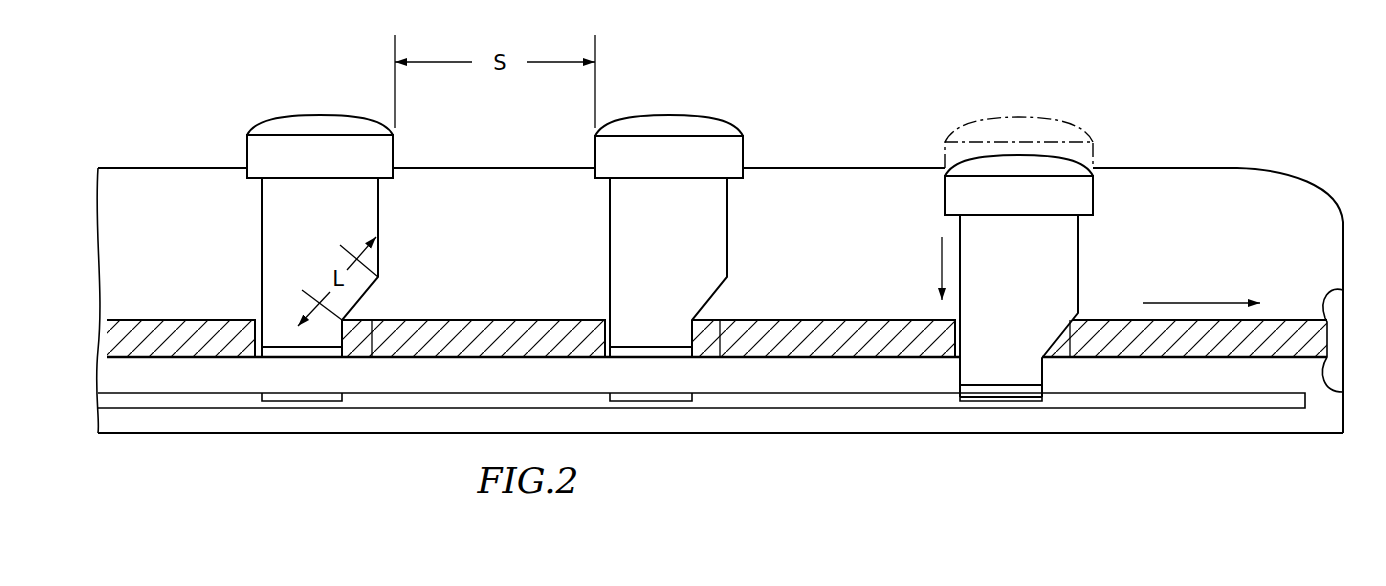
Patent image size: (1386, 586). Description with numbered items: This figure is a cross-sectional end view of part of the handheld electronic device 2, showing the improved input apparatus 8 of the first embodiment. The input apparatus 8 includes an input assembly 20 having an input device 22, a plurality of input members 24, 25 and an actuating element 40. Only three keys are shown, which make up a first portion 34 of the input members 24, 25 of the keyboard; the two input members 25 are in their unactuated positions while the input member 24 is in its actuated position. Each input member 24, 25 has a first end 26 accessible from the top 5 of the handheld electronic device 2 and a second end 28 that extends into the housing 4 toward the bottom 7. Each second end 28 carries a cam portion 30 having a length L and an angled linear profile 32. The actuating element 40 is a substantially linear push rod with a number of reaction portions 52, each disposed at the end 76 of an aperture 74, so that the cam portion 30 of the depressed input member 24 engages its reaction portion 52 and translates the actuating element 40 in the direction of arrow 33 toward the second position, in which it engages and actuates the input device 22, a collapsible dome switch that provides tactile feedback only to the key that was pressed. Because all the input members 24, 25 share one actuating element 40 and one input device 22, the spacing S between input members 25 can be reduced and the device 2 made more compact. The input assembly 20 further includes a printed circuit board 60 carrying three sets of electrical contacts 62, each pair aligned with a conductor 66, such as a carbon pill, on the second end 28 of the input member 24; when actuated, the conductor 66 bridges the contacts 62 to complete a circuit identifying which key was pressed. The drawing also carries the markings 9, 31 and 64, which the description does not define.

The handheld electronic device 2 is at (742, 112).
The housing 4 is at (1290, 182).
The top 5 is at (848, 168).
The bottom 7 is at (878, 433).
The input apparatus 8 is at (775, 470).
The side wall 9 is at (1345, 245).
The input assembly 20 is at (1100, 240).
The input device 22 is at (1327, 305).
The input member 24 is at (968, 228).
The input members 25 is at (265, 197).
The first end 26 is at (352, 125).
The second end 28 is at (272, 332).
The cam portion 30 is at (370, 283).
The insertion direction 31 is at (942, 250).
The profile 32 is at (368, 291).
The arrow 33 is at (1175, 303).
The first portion 34 is at (262, 100).
The actuating element 40 is at (1297, 357).
The reaction portion 52 is at (378, 333).
The printed circuit board 60 is at (1215, 405).
The electrical contacts 62 is at (318, 400).
The contact region 64 is at (990, 417).
The conductor 66 is at (315, 360).
The aperture 74 is at (362, 332).
The end 76 is at (352, 340).